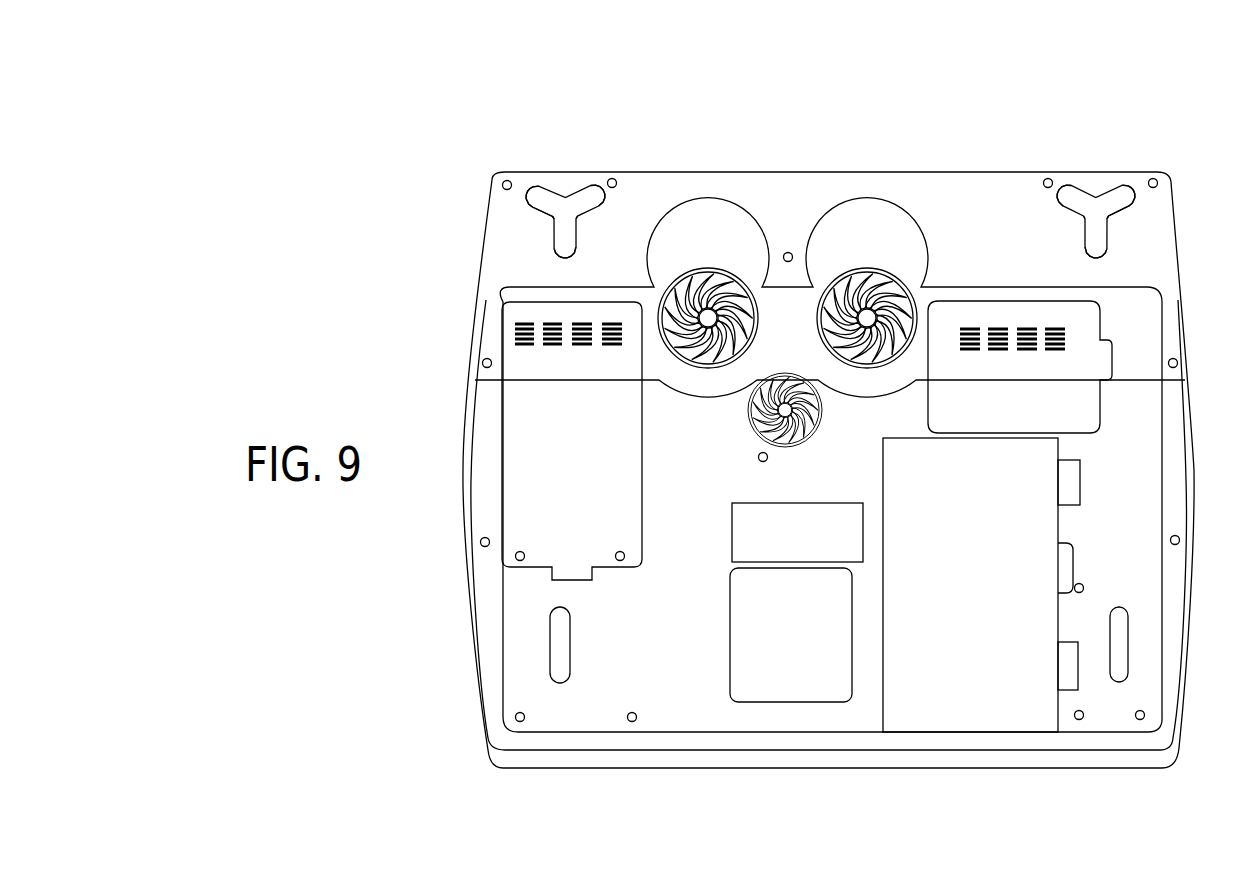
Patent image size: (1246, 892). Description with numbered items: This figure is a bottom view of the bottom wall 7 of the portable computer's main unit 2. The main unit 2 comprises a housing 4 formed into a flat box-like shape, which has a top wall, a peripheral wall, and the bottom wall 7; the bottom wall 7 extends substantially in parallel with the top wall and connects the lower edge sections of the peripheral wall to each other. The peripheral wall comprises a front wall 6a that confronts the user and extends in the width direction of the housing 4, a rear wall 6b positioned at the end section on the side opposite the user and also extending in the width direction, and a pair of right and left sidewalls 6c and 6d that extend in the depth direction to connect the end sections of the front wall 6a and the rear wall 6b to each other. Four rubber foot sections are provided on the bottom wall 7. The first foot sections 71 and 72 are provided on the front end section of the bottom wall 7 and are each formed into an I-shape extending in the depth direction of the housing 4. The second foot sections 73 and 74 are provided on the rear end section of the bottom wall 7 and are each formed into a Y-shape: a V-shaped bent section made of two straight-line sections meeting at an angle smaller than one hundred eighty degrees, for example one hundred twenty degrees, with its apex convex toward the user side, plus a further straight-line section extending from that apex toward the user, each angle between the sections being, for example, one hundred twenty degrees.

The main unit 2 is at (826, 428).
The housing 4 is at (826, 460).
The front wall 6a is at (728, 770).
The rear wall 6b is at (706, 170).
The sidewall 6c is at (1196, 430).
The sidewall 6d is at (465, 482).
The bottom wall 7 is at (789, 185).
The first foot section 71 is at (580, 661).
The first foot section 72 is at (1124, 595).
The second foot section 73 is at (573, 178).
The second foot section 74 is at (1085, 178).